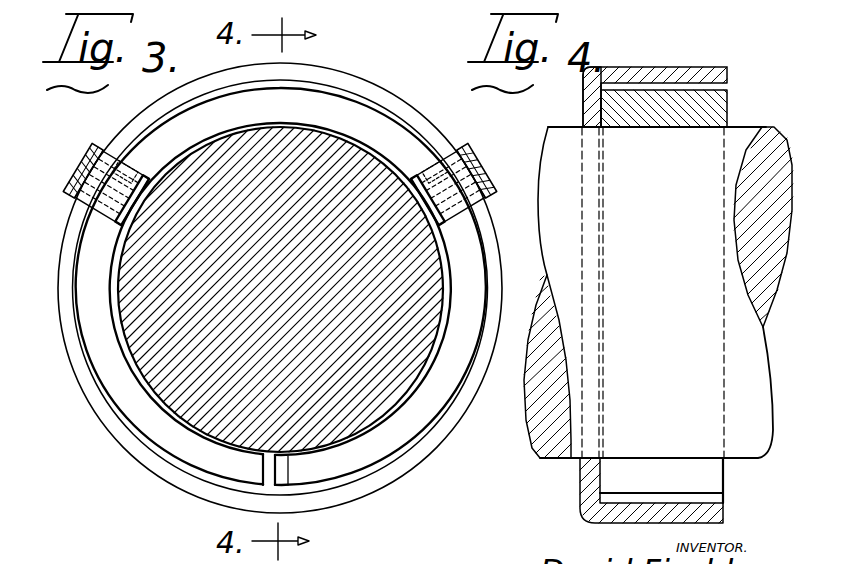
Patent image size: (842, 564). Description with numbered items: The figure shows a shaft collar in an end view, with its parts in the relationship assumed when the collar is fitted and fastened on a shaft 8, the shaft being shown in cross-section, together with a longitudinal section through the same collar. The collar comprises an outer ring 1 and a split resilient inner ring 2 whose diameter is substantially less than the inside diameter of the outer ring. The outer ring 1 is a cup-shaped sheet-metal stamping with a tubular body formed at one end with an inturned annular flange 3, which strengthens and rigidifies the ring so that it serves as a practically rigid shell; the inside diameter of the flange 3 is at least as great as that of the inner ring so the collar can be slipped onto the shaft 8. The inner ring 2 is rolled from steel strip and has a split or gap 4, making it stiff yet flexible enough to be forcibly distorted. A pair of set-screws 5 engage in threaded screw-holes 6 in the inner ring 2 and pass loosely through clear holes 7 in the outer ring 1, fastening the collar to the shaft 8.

In FIG. 3, the outer ring 1 is at (77, 370).
In FIG. 4, the outer ring 1 is at (726, 70).
In FIG. 3, the split resilient inner ring 2 is at (150, 420).
In FIG. 4, the split resilient inner ring 2 is at (706, 109).
In FIG. 4, the inturned annular flange 3 is at (590, 110).
In FIG. 3, the split or gap 4 is at (305, 463).
In FIG. 4, the split or gap 4 is at (690, 478).
In FIG. 3, the set-screws 5 is at (87, 167).
In FIG. 3, the threaded screw-holes 6 is at (127, 147).
In FIG. 3, the clear holes 7 is at (73, 207).
In FIG. 3, the shaft 8 is at (347, 387).
In FIG. 4, the shaft 8 is at (566, 460).